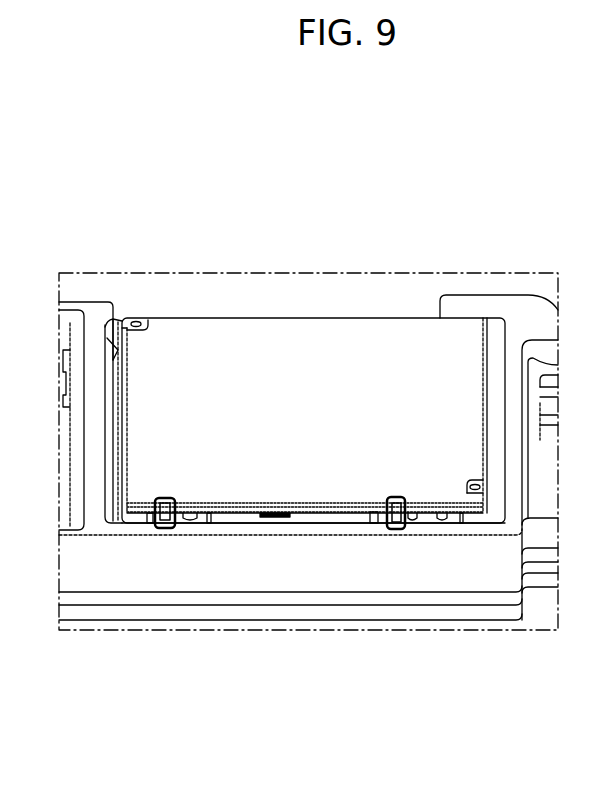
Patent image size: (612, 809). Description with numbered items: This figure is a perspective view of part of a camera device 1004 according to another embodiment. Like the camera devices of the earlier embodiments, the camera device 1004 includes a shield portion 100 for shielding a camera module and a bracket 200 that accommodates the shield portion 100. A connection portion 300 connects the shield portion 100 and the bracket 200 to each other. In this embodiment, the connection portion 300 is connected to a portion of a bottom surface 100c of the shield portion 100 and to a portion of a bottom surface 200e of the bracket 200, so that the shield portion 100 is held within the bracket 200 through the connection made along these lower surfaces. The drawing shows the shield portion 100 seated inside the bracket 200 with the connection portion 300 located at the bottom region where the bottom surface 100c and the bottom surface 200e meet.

The camera device 1004 is at (450, 210).
The shield portion 100 is at (336, 345).
The bottom surface of the shield portion 100c is at (253, 485).
The bracket 200 is at (470, 537).
The bottom surface of the bracket 200e is at (328, 524).
The connection portion 300 is at (165, 530).